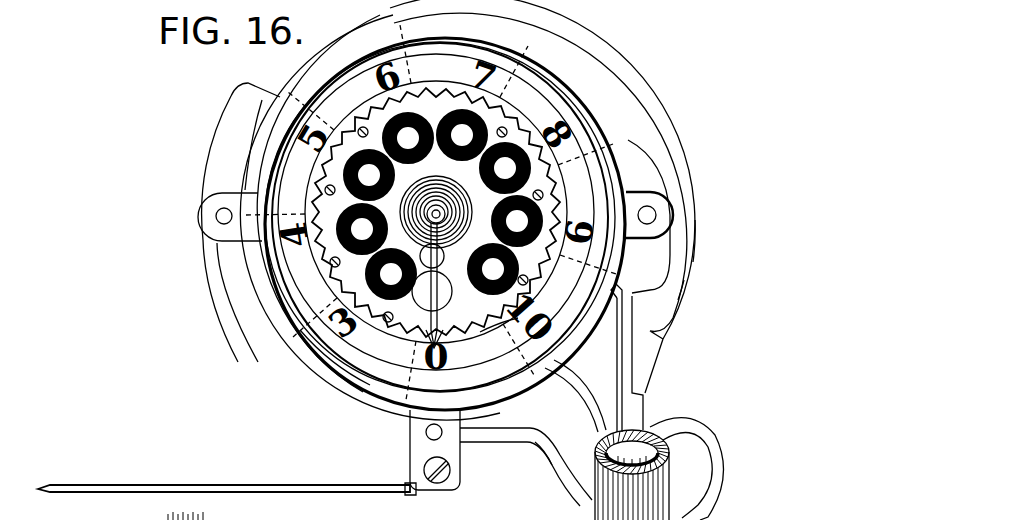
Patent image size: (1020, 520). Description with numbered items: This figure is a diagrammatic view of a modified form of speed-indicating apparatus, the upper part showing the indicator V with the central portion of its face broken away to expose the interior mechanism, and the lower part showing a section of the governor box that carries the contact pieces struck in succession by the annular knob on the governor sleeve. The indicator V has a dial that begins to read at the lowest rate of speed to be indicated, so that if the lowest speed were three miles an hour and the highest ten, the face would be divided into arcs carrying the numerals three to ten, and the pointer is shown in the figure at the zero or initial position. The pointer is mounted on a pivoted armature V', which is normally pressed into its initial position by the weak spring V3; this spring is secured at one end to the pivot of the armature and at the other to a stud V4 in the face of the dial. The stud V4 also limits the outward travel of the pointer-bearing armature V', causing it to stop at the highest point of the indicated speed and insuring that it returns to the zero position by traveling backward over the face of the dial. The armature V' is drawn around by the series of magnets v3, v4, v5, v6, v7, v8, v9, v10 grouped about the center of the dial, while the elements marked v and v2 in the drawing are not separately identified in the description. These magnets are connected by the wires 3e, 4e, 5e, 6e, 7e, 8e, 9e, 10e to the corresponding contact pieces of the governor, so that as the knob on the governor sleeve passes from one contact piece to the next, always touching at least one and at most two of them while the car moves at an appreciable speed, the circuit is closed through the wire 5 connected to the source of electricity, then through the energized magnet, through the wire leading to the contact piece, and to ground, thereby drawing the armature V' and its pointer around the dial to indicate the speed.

The indicator V is at (542, 169).
The pivoted armature V' is at (399, 426).
The weak spring V3 is at (370, 385).
The stud V4 is at (446, 300).
The spiral spring and pivot v is at (447, 222).
The contact segment v2 is at (466, 332).
The magnet v3 is at (392, 324).
The magnet v4 is at (345, 212).
The magnet v5 is at (358, 160).
The magnet v6 is at (409, 116).
The magnet v7 is at (490, 102).
The magnet v8 is at (540, 184).
The magnet v9 is at (550, 219).
The magnet v10 is at (530, 282).
The wire 3e is at (533, 428).
The wire 4e is at (546, 462).
The wire 5e is at (503, 456).
The wire 6e is at (690, 303).
The wire 7e is at (692, 250).
The wire 8e is at (649, 216).
The wire 9e is at (637, 318).
The wire 10e is at (585, 384).
The wire 5 is at (103, 494).